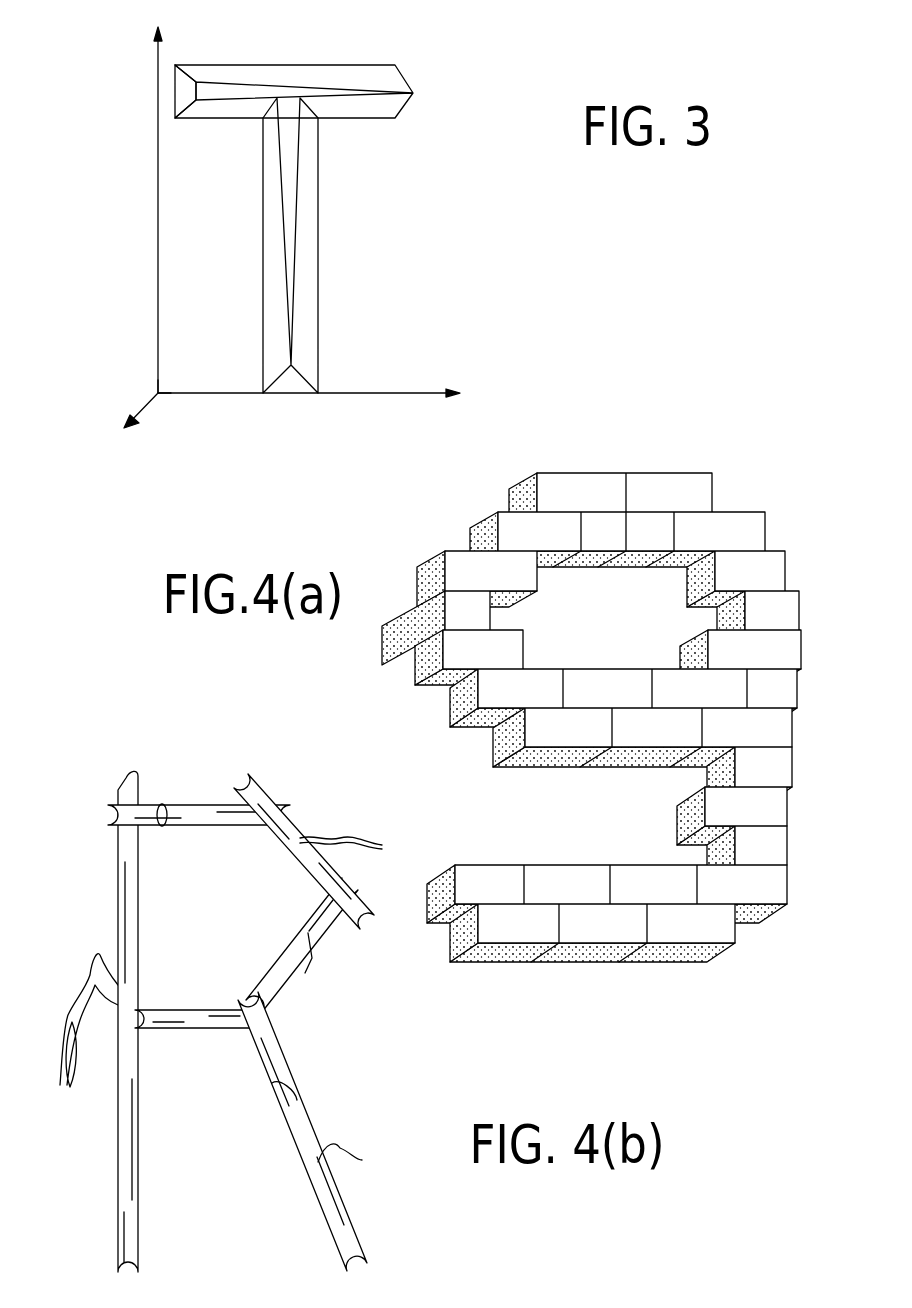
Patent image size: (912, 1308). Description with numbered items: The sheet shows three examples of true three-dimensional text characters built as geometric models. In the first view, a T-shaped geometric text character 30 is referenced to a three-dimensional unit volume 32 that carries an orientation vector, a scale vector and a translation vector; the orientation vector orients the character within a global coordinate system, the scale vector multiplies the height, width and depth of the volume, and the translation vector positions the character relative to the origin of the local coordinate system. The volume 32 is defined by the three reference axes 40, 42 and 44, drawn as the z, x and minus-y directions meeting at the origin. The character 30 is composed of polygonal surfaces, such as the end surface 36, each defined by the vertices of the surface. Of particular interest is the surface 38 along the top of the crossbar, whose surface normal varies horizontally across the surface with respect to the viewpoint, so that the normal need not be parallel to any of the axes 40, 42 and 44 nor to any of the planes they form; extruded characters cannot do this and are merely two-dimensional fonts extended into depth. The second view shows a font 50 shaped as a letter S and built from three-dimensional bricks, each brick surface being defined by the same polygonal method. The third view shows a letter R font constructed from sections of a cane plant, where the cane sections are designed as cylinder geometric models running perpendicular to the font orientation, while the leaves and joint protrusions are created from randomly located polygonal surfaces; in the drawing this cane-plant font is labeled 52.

In FIG. 3, the geometric text character 30 is at (330, 197).
In FIG. 3, the three-dimensional unit volume 32 is at (157, 393).
In FIG. 3, the polygonal surface 36 is at (187, 84).
In FIG. 3, the surface 38 is at (323, 75).
In FIG. 3, the reference axis 40 is at (158, 195).
In FIG. 3, the reference axis 42 is at (372, 395).
In FIG. 3, the reference axis 44 is at (147, 407).
The font 50 is at (788, 451).
The letter R built from sticks 52 is at (385, 1027).